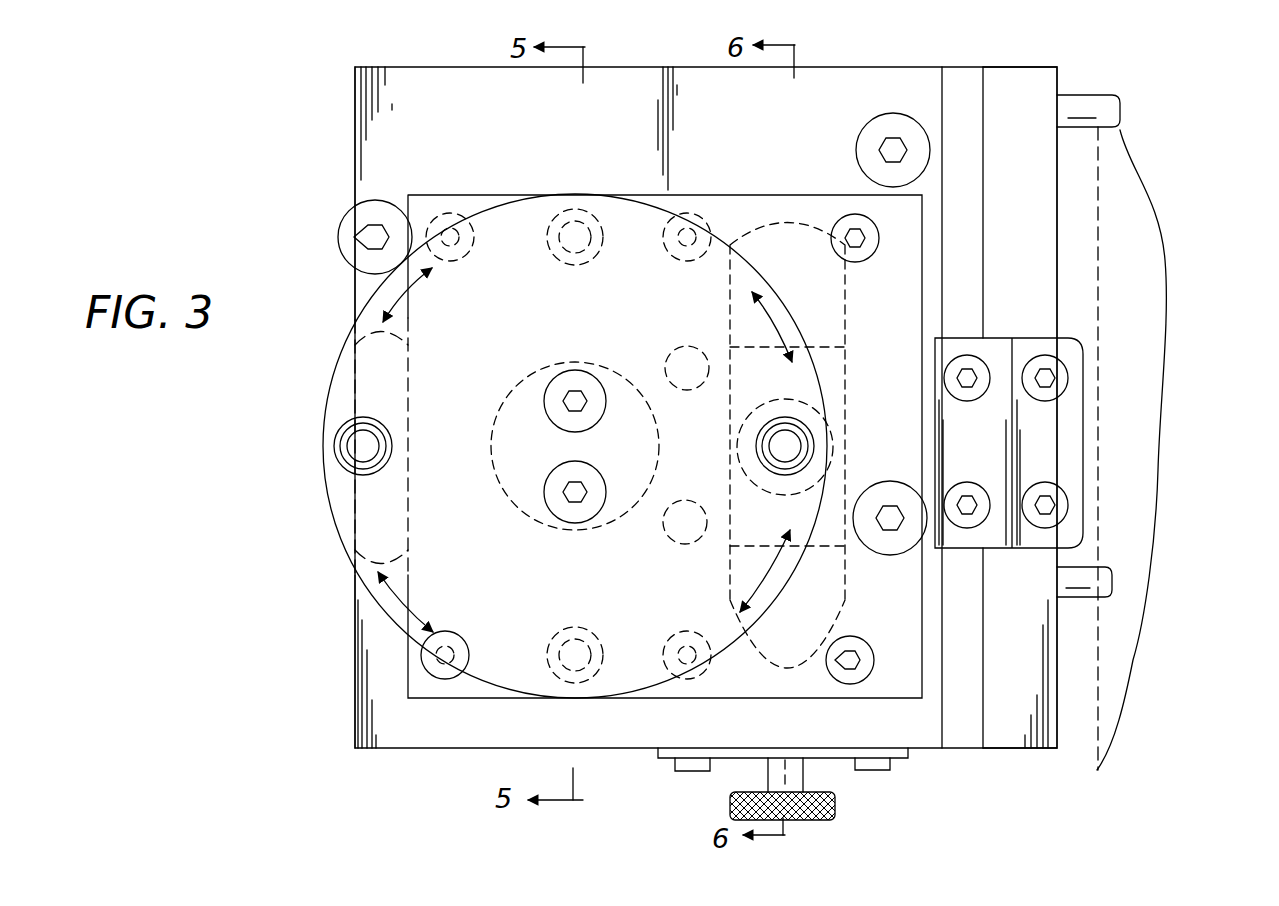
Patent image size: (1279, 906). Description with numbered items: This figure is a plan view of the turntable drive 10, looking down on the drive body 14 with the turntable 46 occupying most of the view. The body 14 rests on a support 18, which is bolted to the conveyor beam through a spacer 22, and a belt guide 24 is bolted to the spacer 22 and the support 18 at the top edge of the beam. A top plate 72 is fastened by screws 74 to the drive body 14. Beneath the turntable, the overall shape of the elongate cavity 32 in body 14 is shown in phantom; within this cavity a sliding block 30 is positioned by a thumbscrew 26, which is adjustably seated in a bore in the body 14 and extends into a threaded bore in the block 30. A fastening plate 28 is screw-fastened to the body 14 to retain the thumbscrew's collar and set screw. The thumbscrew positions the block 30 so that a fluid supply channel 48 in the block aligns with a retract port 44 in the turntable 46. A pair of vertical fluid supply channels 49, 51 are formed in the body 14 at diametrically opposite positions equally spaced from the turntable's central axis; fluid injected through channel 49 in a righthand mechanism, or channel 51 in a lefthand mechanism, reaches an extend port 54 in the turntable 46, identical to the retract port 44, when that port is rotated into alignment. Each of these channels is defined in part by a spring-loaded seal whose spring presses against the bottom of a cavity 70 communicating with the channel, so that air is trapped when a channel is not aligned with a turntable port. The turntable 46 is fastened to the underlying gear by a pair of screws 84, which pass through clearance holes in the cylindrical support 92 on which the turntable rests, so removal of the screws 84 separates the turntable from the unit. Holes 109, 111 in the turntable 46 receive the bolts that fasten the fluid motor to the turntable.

The turntable drive 10 is at (1183, 131).
The drive body 14 is at (371, 112).
The support 18 is at (972, 67).
The spacer 22 is at (1060, 257).
The belt guide 24 is at (350, 228).
The thumbscrew 26 is at (836, 812).
The fastening plate 28 is at (662, 752).
The sliding block 30 is at (848, 550).
The elongate cavity 32 is at (846, 310).
The retract port 44 is at (797, 451).
The turntable 46 is at (530, 215).
The fluid supply channel 48 is at (808, 430).
The vertical fluid supply channel 49 is at (598, 252).
The vertical fluid supply channel 51 is at (600, 650).
The extend port 54 is at (340, 462).
The cavity 70 is at (562, 258).
The top plate 72 is at (748, 197).
The screws 74 is at (452, 215).
The screws 84 is at (558, 478).
The cylindrical support 92 is at (492, 420).
The hole 109 is at (670, 365).
The hole 111 is at (668, 542).